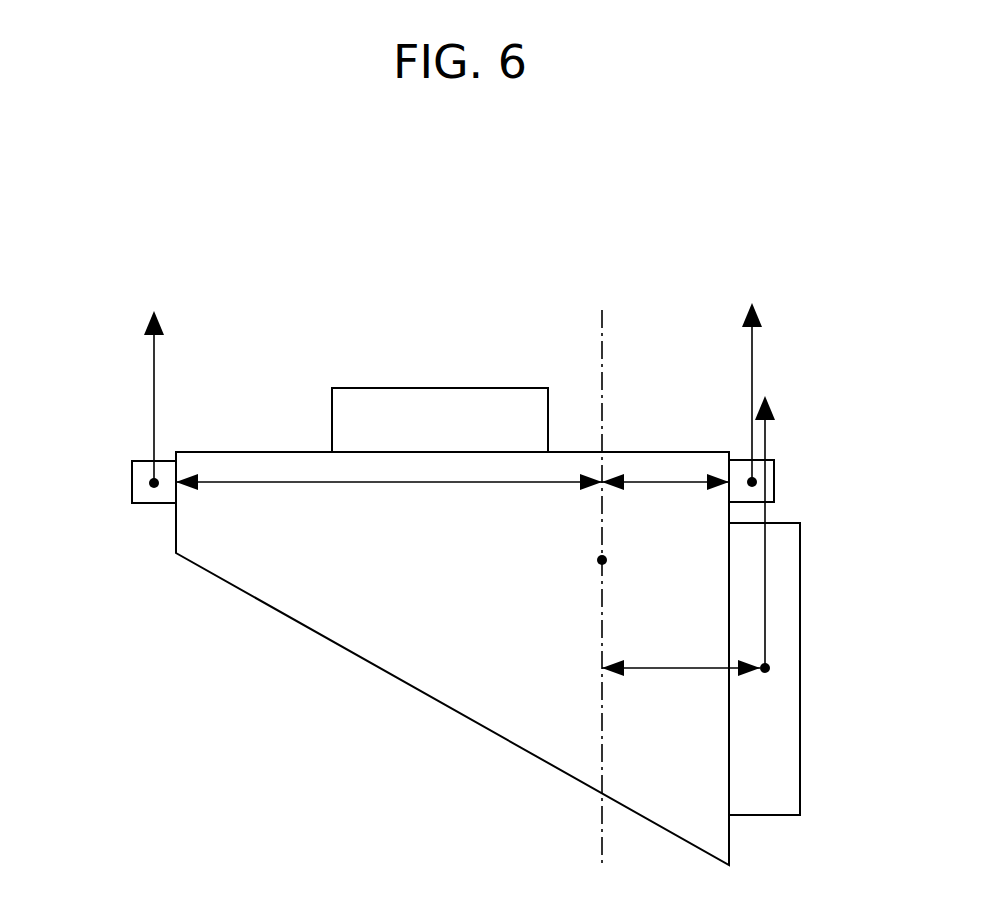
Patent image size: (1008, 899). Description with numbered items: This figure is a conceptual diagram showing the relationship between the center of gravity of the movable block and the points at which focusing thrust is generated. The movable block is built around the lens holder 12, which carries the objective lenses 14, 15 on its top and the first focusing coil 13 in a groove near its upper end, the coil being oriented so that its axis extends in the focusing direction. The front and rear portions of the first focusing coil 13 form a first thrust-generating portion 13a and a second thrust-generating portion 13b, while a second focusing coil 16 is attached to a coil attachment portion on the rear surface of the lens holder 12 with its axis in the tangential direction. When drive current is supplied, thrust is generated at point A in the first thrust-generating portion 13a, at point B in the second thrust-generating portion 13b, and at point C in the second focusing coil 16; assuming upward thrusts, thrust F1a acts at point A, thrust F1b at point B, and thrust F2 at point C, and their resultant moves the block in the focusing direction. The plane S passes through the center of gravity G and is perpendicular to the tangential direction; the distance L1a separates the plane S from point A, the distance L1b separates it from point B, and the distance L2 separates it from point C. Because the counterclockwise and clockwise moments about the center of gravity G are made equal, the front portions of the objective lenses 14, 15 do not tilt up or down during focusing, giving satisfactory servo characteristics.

The lens holder 12 is at (342, 628).
The first focusing coil 13 is at (94, 424).
The first thrust-generating portion 13a is at (132, 465).
The second thrust-generating portion 13b is at (777, 484).
The objective lens 14 is at (440, 369).
The objective lens 15 is at (440, 400).
The second focusing coil 16 is at (800, 605).
The plane S is at (598, 340).
The center of gravity G is at (602, 560).
The point A is at (150, 485).
The point B is at (750, 478).
The point C is at (768, 672).
The thrust F1a is at (177, 397).
The thrust F1b is at (774, 392).
The thrust F2 is at (781, 532).
The minimum distance L1a is at (389, 499).
The minimum distance L1b is at (665, 498).
The minimum distance L2 is at (681, 684).